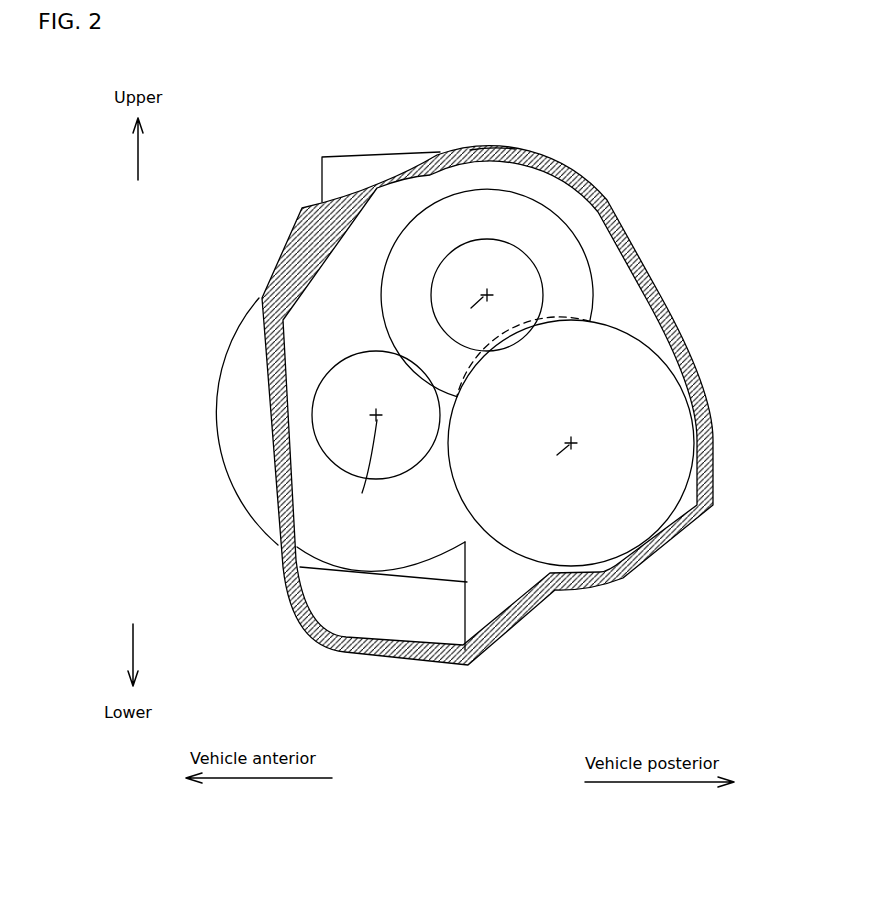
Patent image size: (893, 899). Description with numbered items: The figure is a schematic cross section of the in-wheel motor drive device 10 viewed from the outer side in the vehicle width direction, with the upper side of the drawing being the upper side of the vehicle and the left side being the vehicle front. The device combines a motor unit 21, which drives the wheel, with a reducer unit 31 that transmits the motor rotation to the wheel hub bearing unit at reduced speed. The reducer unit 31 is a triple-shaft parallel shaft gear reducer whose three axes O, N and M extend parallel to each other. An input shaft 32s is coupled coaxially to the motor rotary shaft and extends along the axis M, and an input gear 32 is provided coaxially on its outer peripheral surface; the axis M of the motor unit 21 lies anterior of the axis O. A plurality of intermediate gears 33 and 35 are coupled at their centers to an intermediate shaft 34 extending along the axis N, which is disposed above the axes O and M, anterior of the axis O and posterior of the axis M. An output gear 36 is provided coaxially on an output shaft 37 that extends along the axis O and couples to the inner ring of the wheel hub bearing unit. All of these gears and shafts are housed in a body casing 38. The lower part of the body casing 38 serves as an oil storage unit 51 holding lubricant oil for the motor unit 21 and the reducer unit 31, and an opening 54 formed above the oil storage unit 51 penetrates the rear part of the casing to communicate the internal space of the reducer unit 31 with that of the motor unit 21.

The in-wheel motor drive device 10 is at (650, 128).
The motor unit 21 is at (228, 403).
The reducer unit 31 is at (652, 245).
The input gear 32 is at (368, 418).
The input shaft 32s is at (314, 432).
The intermediate gear 33 is at (448, 196).
The intermediate shaft 34 is at (497, 288).
The intermediate gear 35 is at (508, 238).
The output gear 36 is at (633, 333).
The output shaft 37 is at (587, 435).
The body casing 38 is at (493, 147).
The oil storage unit 51 is at (388, 620).
The opening 54 is at (300, 566).